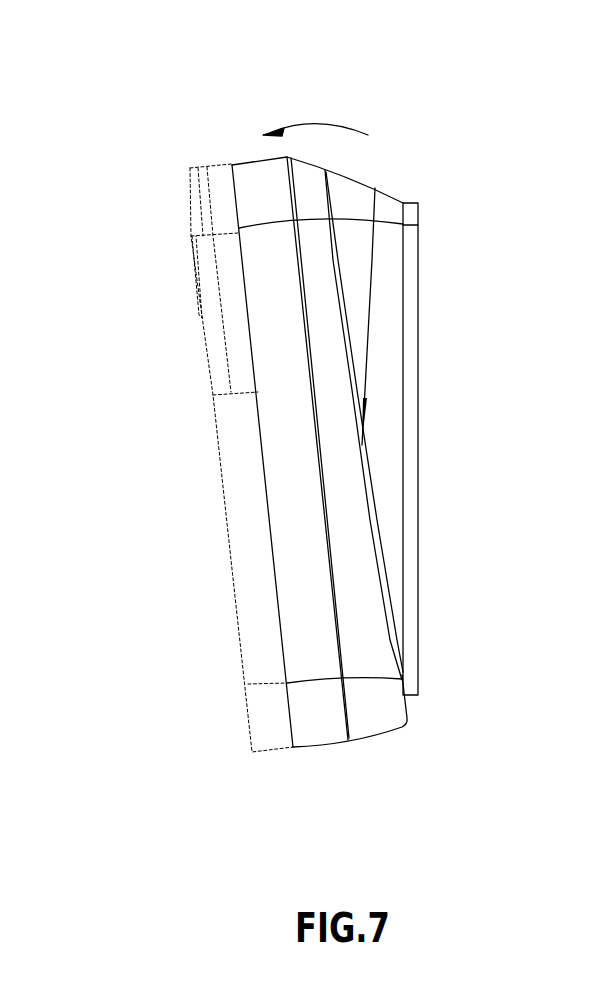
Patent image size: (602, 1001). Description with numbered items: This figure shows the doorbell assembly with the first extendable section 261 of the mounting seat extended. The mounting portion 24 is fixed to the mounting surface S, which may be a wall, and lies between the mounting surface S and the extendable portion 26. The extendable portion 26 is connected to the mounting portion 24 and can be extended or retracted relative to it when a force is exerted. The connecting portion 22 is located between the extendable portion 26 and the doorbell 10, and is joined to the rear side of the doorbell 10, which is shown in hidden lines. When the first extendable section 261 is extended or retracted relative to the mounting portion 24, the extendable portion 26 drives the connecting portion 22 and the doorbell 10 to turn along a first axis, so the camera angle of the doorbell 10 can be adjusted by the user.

The doorbell 10 is at (197, 275).
The connecting portion 22 is at (260, 173).
The mounting portion 24 is at (410, 213).
The extendable portion 26 is at (385, 110).
The first extendable section 261 is at (354, 195).
The mounting surface S is at (418, 570).